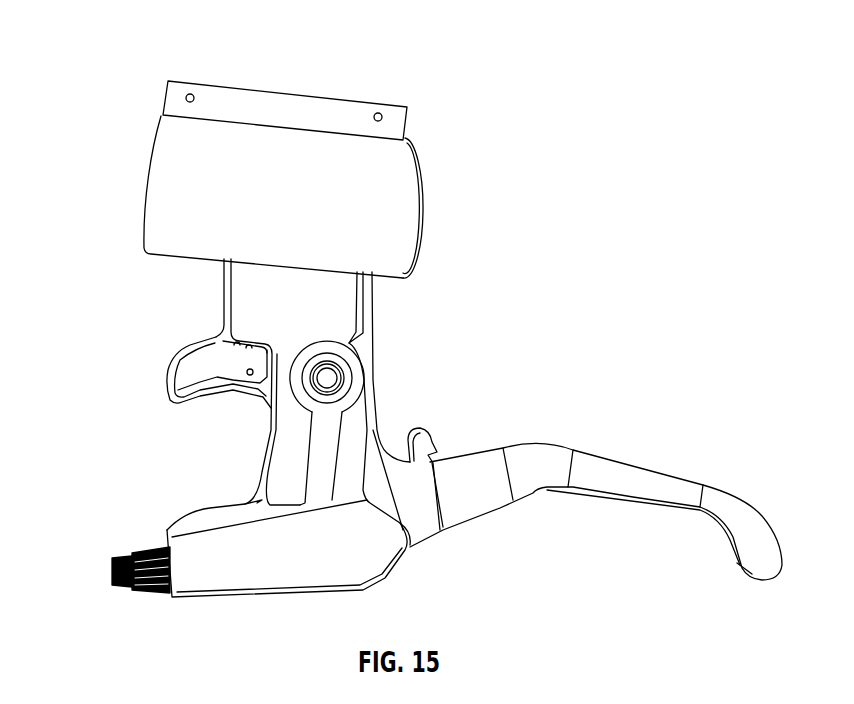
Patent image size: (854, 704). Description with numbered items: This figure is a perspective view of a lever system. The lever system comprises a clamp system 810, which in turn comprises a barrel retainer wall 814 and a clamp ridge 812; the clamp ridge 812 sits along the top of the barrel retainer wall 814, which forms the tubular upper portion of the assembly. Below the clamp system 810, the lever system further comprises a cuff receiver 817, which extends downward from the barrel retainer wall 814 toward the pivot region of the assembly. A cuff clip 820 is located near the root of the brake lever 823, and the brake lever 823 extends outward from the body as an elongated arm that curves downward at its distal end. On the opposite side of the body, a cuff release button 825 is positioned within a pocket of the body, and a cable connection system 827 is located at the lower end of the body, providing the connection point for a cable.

The clamp system 810 is at (108, 50).
The clamp ridge 812 is at (323, 117).
The barrel retainer wall 814 is at (305, 212).
The cuff receiver 817 is at (387, 313).
The cuff clip 820 is at (430, 423).
The brake lever 823 is at (663, 455).
The cuff release button 825 is at (148, 380).
The cable connection system 827 is at (100, 573).